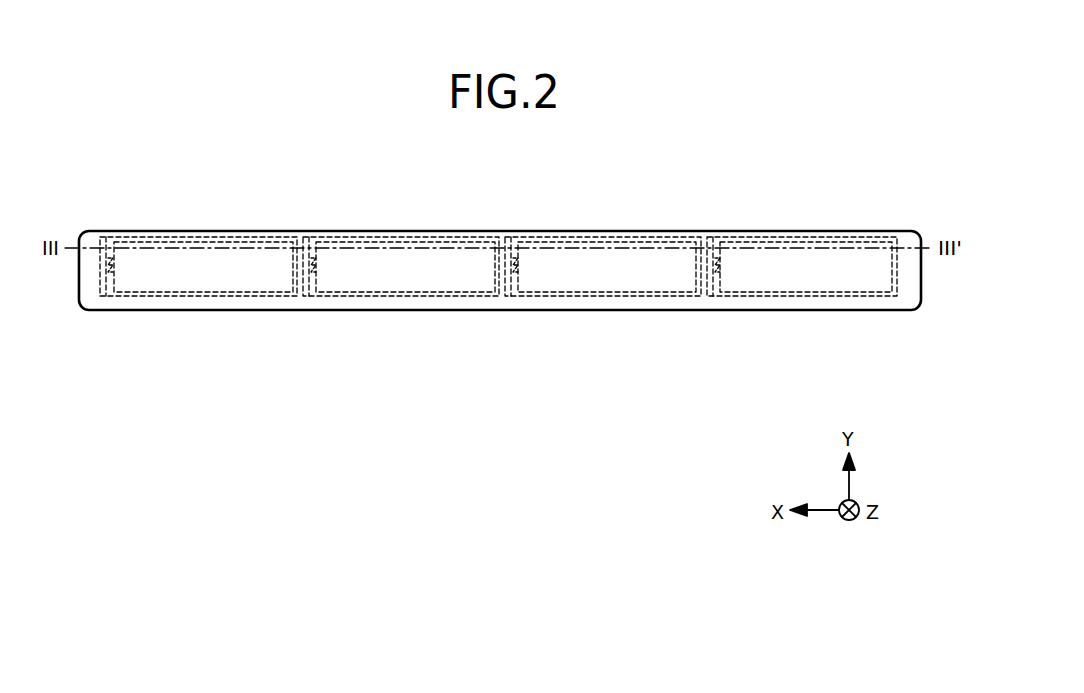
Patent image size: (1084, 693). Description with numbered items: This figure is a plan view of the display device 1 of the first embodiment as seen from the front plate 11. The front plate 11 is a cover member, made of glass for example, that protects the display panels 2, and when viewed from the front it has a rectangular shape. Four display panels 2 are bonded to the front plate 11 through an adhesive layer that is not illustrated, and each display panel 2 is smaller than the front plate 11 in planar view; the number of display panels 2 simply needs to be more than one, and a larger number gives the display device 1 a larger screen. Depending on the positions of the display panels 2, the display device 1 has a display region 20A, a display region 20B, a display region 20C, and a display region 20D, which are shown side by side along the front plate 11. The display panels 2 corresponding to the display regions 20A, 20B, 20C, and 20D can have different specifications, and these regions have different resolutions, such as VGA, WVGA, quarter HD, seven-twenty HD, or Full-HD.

The display device 1 is at (754, 203).
The display panel 2 is at (152, 297).
The front plate 11 is at (903, 311).
The display region 20A is at (204, 286).
The display region 20B is at (419, 286).
The display region 20C is at (619, 286).
The display region 20D is at (819, 286).